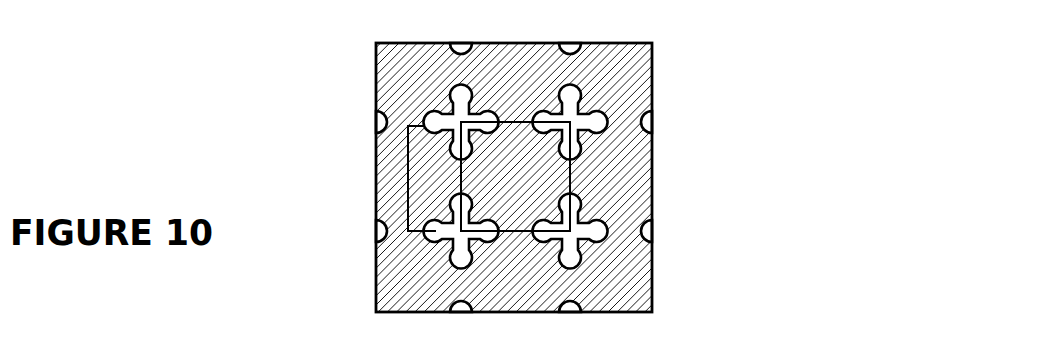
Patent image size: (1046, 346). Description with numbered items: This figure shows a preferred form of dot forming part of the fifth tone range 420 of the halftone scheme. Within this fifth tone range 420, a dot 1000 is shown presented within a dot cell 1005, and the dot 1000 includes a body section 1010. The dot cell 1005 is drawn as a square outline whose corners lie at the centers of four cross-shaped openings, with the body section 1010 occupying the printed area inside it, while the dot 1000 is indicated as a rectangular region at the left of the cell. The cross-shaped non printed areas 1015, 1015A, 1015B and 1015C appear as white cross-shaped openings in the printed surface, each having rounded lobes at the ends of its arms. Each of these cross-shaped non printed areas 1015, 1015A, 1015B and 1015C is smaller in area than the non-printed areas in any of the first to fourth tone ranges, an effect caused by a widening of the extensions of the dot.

The fifth tone range 420 is at (645, 65).
The dot 1000 is at (408, 182).
The dot cell 1005 is at (570, 170).
The body section 1010 is at (540, 168).
The cross-shaped non printed area 1015 is at (441, 120).
The cross-shaped non printed area 1015A is at (591, 122).
The cross-shaped non printed area 1015B is at (572, 258).
The cross-shaped non printed area 1015C is at (462, 254).